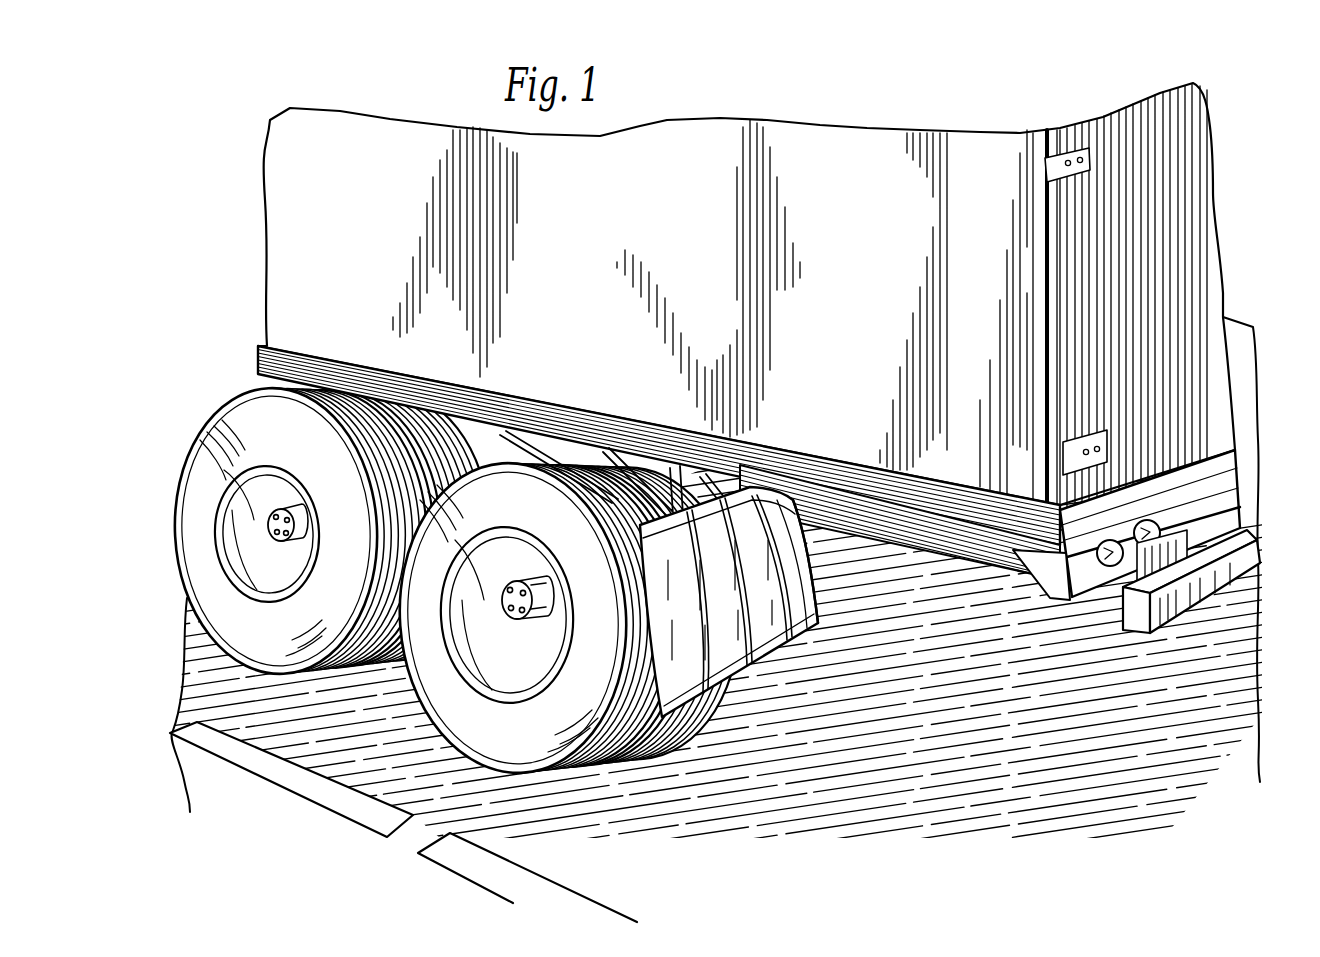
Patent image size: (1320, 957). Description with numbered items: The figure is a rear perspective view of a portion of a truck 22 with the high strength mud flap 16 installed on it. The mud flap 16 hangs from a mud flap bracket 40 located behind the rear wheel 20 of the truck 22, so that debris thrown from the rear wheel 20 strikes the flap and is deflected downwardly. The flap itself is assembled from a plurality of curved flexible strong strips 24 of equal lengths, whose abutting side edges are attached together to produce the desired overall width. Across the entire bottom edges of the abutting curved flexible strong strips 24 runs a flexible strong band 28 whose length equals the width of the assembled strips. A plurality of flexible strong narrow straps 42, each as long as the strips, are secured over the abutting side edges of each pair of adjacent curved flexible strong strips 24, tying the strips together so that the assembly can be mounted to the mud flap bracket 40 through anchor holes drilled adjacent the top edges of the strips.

The high strength mud flap 16 is at (767, 627).
The rear wheel 20 is at (525, 738).
The truck 22 is at (260, 219).
The curved flexible strong strips 24 is at (767, 607).
The flexible strong band 28 is at (796, 628).
The mud flap bracket 40 is at (712, 475).
The flexible strong narrow straps 42 is at (752, 634).